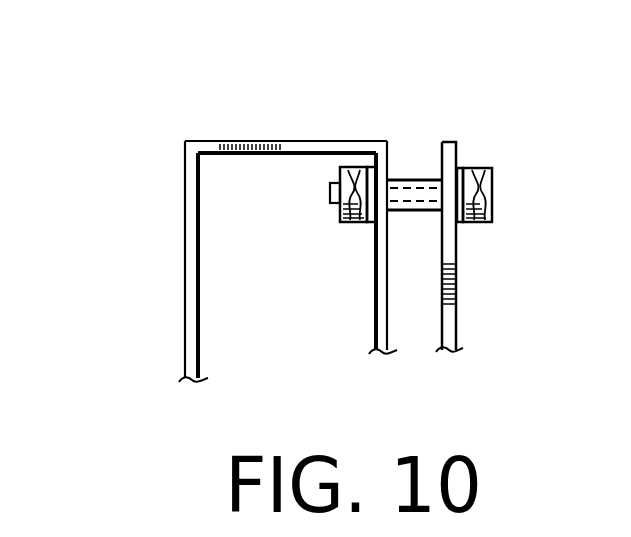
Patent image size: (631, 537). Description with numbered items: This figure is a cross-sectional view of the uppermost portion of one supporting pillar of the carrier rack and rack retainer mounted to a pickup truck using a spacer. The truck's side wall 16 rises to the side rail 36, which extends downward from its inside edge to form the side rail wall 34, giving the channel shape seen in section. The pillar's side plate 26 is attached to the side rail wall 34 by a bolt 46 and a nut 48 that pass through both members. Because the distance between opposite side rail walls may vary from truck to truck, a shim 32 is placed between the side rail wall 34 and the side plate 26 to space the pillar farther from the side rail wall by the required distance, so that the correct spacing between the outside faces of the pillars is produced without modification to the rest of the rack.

The side wall 16 is at (185, 317).
The side plate 26 is at (457, 272).
The shim 32 is at (416, 180).
The side rail wall 34 is at (388, 282).
The side rail 36 is at (282, 142).
The bolt 46 is at (480, 168).
The nut 48 is at (355, 222).